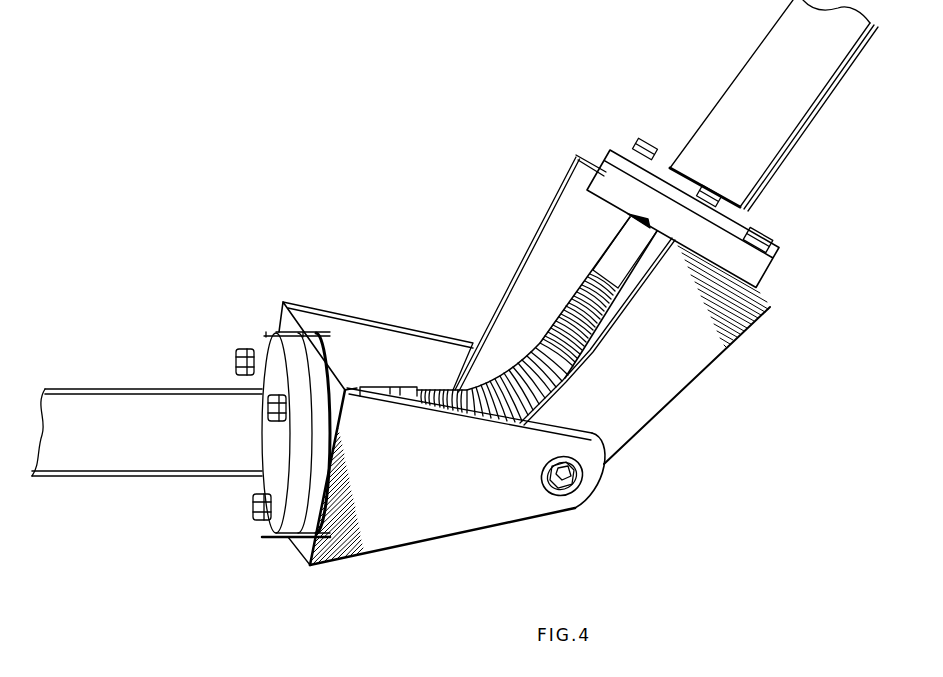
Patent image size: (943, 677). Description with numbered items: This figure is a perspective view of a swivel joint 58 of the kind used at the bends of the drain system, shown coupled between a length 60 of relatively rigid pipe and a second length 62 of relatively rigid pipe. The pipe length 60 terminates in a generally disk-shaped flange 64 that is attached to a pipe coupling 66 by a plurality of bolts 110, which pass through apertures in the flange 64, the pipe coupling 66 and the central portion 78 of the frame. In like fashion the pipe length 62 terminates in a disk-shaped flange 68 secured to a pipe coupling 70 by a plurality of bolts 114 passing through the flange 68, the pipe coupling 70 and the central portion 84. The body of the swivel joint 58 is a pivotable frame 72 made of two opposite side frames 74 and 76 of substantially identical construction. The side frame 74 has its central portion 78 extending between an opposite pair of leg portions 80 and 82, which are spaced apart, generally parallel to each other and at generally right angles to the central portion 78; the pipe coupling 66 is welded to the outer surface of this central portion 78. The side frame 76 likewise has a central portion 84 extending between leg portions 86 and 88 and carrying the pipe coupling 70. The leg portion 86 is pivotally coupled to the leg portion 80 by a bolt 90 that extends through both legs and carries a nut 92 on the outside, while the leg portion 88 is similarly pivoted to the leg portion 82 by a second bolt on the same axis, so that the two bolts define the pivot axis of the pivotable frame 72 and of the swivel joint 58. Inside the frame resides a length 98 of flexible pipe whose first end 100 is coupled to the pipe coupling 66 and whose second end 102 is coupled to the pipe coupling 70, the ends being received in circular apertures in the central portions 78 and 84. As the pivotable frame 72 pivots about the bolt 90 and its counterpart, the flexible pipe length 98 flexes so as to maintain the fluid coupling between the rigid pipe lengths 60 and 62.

The swivel joint 58 is at (650, 430).
The length of relatively rigid pipe 60 is at (137, 460).
The length of relatively rigid pipe 62 is at (780, 128).
The disk-shaped flange 64 is at (250, 486).
The pipe coupling 66 is at (315, 388).
The disk-shaped flange 68 is at (737, 247).
The pipe coupling 70 is at (660, 200).
The pivotable frame 72 is at (551, 512).
The side frame 74 is at (420, 507).
The side frame 76 is at (662, 368).
The central portion 78 is at (282, 320).
The leg portion 80 is at (478, 508).
The leg portion 82 is at (433, 352).
The central portion 84 is at (593, 163).
The leg portion 86 is at (707, 352).
The leg portion 88 is at (560, 208).
The bolt 90 is at (571, 487).
The nut 92 is at (580, 462).
The length of flexible pipe 98 is at (534, 355).
The first end 100 is at (375, 387).
The second end 102 is at (612, 253).
The bolts 110 is at (236, 362).
The bolts 114 is at (697, 183).